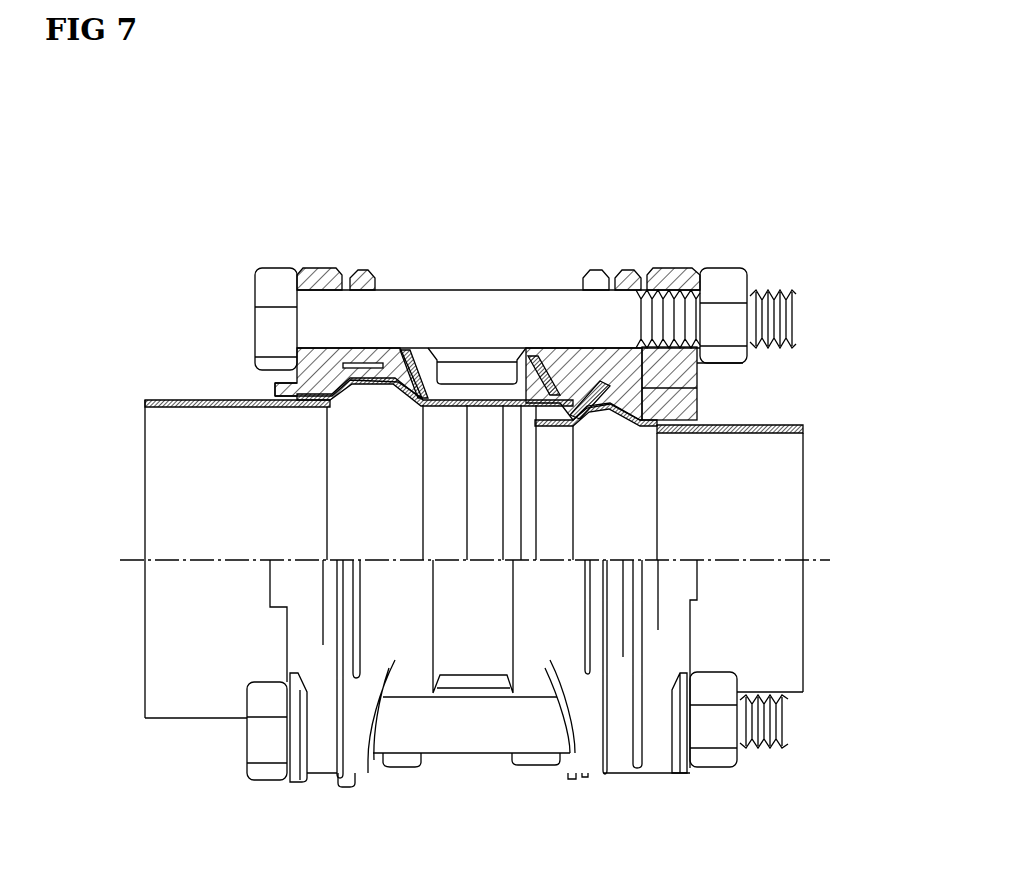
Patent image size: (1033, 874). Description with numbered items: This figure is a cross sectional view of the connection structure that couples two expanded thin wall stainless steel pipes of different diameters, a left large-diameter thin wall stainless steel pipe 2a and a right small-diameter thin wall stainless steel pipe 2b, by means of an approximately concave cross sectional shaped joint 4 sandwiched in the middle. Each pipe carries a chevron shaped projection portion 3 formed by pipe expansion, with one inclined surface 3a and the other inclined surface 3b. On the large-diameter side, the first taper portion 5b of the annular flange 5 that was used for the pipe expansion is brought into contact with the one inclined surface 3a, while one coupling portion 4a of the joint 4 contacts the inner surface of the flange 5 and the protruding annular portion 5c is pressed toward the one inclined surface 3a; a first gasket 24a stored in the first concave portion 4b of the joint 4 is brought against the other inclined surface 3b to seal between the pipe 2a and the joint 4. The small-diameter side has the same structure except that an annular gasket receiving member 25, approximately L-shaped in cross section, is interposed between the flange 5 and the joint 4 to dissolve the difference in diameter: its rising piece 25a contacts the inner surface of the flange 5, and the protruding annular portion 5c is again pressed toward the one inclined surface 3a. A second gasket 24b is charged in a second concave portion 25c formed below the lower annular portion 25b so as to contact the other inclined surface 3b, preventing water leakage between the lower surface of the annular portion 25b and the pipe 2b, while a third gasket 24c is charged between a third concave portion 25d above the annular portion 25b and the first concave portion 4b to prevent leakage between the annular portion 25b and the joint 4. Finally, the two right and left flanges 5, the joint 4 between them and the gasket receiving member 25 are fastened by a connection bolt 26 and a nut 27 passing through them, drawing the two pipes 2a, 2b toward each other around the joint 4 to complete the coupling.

The large-diameter thin wall stainless steel pipe 2a is at (182, 693).
The small-diameter thin wall stainless steel pipe 2b is at (790, 670).
The chevron shaped projection portion 3 is at (326, 462).
The inclined portion 3a is at (333, 428).
The inclined portion 3b is at (407, 398).
The joint 4 is at (574, 777).
The coupling portion 4a is at (365, 271).
The first concave portion 4b is at (434, 362).
The flange 5 is at (297, 270).
The first taper portion 5b is at (283, 382).
The protruding annular portion 5c is at (360, 373).
The first gasket 24a is at (407, 363).
The second gasket 24b is at (612, 400).
The third gasket 24c is at (545, 360).
The gasket receiving member 25 is at (617, 272).
The rising piece 25a is at (630, 272).
The annular portion 25b is at (697, 372).
The second concave portion 25c is at (568, 420).
The third concave portion 25d is at (572, 357).
The connection bolt 26 is at (280, 345).
The nut 27 is at (733, 285).